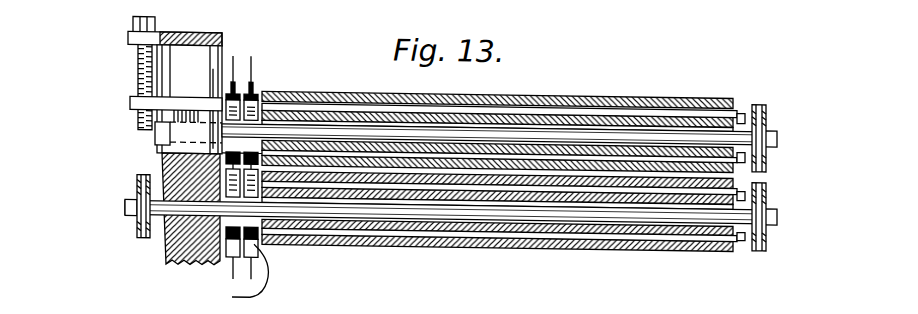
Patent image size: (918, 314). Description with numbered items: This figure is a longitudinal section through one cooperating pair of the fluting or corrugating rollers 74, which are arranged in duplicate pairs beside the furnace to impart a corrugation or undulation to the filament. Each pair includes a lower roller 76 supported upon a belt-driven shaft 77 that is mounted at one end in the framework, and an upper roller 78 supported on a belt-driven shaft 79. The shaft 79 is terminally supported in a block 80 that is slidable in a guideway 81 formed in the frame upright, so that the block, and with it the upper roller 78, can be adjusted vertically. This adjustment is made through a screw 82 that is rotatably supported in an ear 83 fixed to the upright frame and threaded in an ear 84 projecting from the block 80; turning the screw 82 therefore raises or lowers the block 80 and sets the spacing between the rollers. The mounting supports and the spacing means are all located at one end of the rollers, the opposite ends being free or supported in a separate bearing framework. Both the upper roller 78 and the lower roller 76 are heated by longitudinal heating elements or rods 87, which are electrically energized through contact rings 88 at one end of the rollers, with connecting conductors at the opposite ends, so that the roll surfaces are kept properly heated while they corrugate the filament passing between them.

The fluting or corrugating rollers 74 is at (499, 189).
The lower roller 76 is at (393, 240).
The belt-driven shaft 77 is at (143, 234).
The upper roller 78 is at (497, 156).
The belt-driven shaft 79 is at (687, 130).
The block 80 is at (180, 130).
The guideway 81 is at (198, 68).
The screw 82 is at (140, 67).
The ear 83 is at (156, 37).
The ear 84 is at (136, 105).
The heating elements or rods 87 is at (281, 233).
The contact rings 88 is at (225, 248).